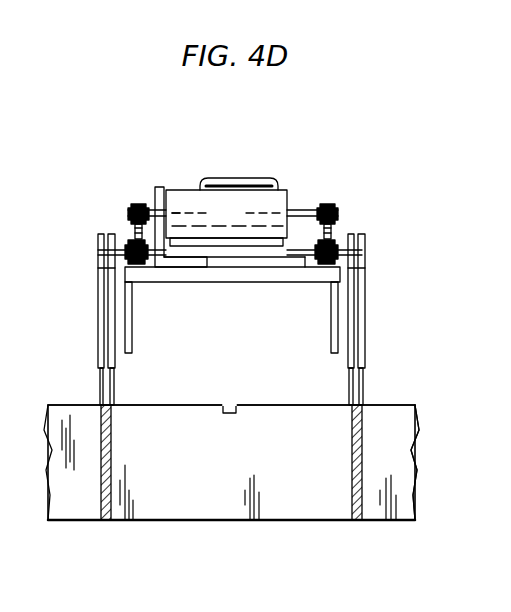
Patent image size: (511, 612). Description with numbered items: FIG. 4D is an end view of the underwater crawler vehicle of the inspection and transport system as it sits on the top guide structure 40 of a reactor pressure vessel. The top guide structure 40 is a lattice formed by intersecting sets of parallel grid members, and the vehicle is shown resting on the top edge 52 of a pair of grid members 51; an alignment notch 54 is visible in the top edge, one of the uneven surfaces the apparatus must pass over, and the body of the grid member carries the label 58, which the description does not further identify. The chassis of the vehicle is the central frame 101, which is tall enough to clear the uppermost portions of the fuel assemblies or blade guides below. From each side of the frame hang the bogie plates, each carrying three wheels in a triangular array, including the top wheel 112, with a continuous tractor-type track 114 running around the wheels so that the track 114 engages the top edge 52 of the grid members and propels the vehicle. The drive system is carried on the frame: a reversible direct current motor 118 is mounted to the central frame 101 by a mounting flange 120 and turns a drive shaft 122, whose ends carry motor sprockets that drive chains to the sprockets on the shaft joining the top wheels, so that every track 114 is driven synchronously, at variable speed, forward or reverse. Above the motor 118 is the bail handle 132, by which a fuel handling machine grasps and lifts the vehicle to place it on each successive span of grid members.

The top guide structure 40 is at (44, 388).
The parallel grid members 51 is at (416, 465).
The top edge 52 is at (392, 405).
The alignment notch 54 is at (236, 412).
The base block 58 is at (166, 480).
The central frame 101 is at (220, 283).
The top wheel 112 is at (97, 250).
The track 114 is at (366, 340).
The motor 118 is at (297, 192).
The mounting flange 120 is at (158, 186).
The drive shaft 122 is at (302, 212).
The bail handle 132 is at (235, 178).